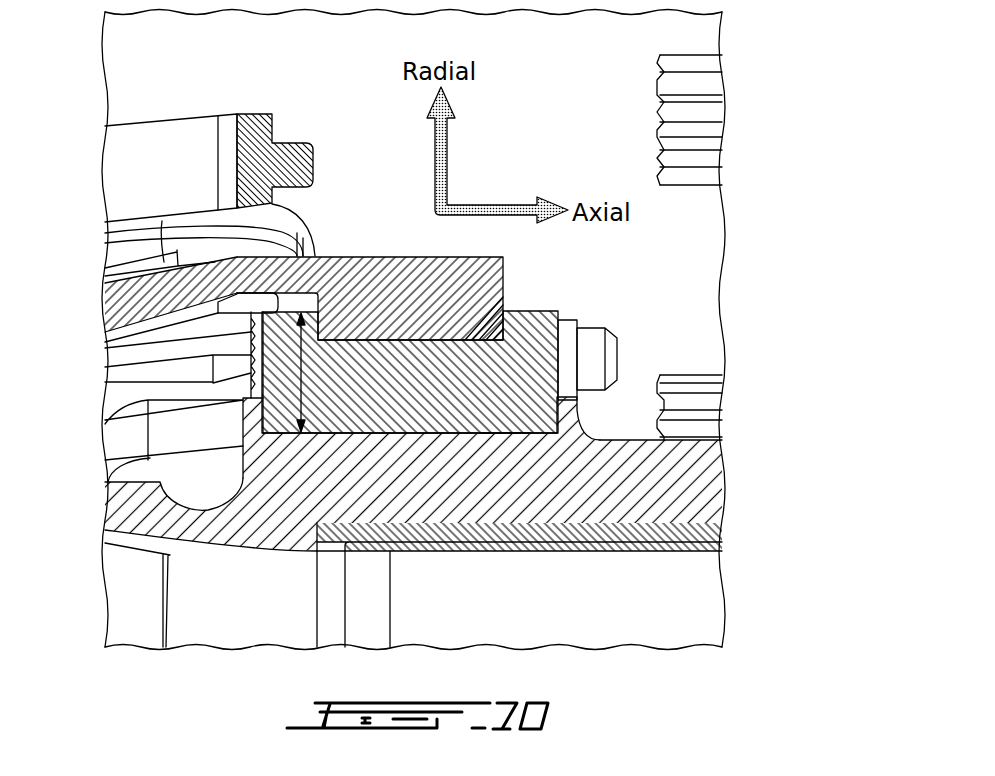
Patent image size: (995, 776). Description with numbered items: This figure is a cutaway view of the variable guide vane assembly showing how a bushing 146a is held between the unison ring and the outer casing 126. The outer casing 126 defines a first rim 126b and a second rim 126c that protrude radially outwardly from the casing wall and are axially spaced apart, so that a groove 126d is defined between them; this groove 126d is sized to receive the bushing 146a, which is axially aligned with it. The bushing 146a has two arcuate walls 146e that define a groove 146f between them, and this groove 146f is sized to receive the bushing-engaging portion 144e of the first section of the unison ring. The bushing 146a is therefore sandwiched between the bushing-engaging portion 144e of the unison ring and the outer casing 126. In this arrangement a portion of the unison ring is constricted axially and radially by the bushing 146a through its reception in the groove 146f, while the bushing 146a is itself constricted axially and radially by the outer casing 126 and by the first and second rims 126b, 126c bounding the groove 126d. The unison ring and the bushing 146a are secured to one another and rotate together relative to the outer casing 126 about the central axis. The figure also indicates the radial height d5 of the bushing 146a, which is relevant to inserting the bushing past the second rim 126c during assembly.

The bushing-engaging portion 144e is at (403, 290).
The groove 146f is at (503, 302).
The bushing 146a is at (545, 313).
The second rim 126c is at (577, 408).
The arcuate wall 146e is at (182, 321).
The radial height d5 is at (258, 377).
The first rim 126b is at (250, 414).
The outer casing 126 is at (412, 512).
The groove 126d is at (503, 440).